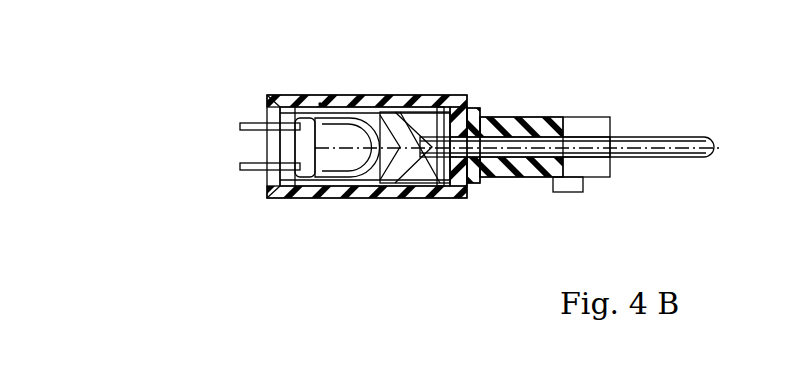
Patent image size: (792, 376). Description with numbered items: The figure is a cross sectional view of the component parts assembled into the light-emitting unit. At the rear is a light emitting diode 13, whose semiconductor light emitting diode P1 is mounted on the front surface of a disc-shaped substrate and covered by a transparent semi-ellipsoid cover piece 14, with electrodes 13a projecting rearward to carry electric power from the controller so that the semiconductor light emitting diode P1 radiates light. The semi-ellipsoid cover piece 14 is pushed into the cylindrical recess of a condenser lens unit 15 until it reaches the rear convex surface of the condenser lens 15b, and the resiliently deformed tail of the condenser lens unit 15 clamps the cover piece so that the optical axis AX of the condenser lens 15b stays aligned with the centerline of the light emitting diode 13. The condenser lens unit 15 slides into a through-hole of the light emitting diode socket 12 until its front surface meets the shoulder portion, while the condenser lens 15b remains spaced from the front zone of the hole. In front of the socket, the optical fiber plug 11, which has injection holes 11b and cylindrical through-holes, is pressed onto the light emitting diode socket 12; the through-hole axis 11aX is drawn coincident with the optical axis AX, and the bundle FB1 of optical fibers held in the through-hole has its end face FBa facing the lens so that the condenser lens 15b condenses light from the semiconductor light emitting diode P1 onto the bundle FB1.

The optical fiber plug 11 is at (534, 181).
The axis of sleeve portion 11aX is at (618, 138).
The injection hole 11b is at (513, 117).
The light emitting diode socket 12 is at (345, 200).
The light emitting diode 13 is at (288, 200).
The electrode 13a is at (243, 131).
The semi-ellipsoid cover piece 14 is at (350, 135).
The condenser lens unit 15 is at (388, 198).
The condenser lens 15b is at (440, 125).
The semiconductor light emitting diode P1 is at (320, 103).
The optical axis AX is at (405, 147).
The bundle of optical fibers FB1 is at (675, 158).
The optical fiber end face FBa is at (449, 192).